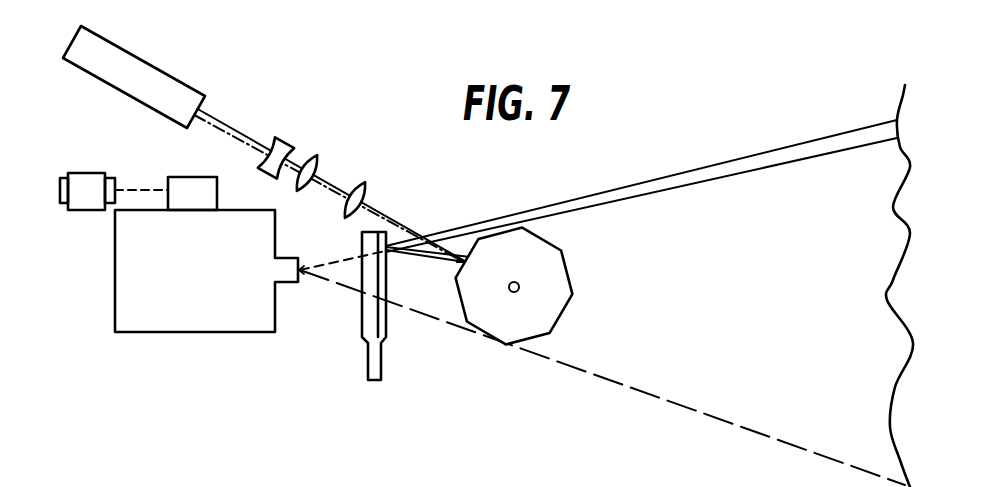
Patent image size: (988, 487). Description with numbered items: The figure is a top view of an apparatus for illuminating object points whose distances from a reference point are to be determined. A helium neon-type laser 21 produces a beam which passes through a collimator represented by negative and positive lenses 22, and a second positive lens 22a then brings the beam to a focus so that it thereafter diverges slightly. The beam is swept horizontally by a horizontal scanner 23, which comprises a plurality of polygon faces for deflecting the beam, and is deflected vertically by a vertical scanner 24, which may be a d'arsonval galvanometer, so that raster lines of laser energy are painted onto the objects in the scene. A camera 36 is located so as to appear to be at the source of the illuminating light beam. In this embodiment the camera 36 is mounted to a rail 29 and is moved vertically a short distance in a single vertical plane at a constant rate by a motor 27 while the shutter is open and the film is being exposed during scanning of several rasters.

The laser 21 is at (173, 78).
The negative and positive lenses 22 is at (318, 160).
The second positive lens 22a is at (366, 187).
The horizontal scanner 23 is at (570, 272).
The vertical scanner 24 is at (384, 358).
The motor 27 is at (91, 173).
The rail 29 is at (184, 176).
The camera 36 is at (260, 332).